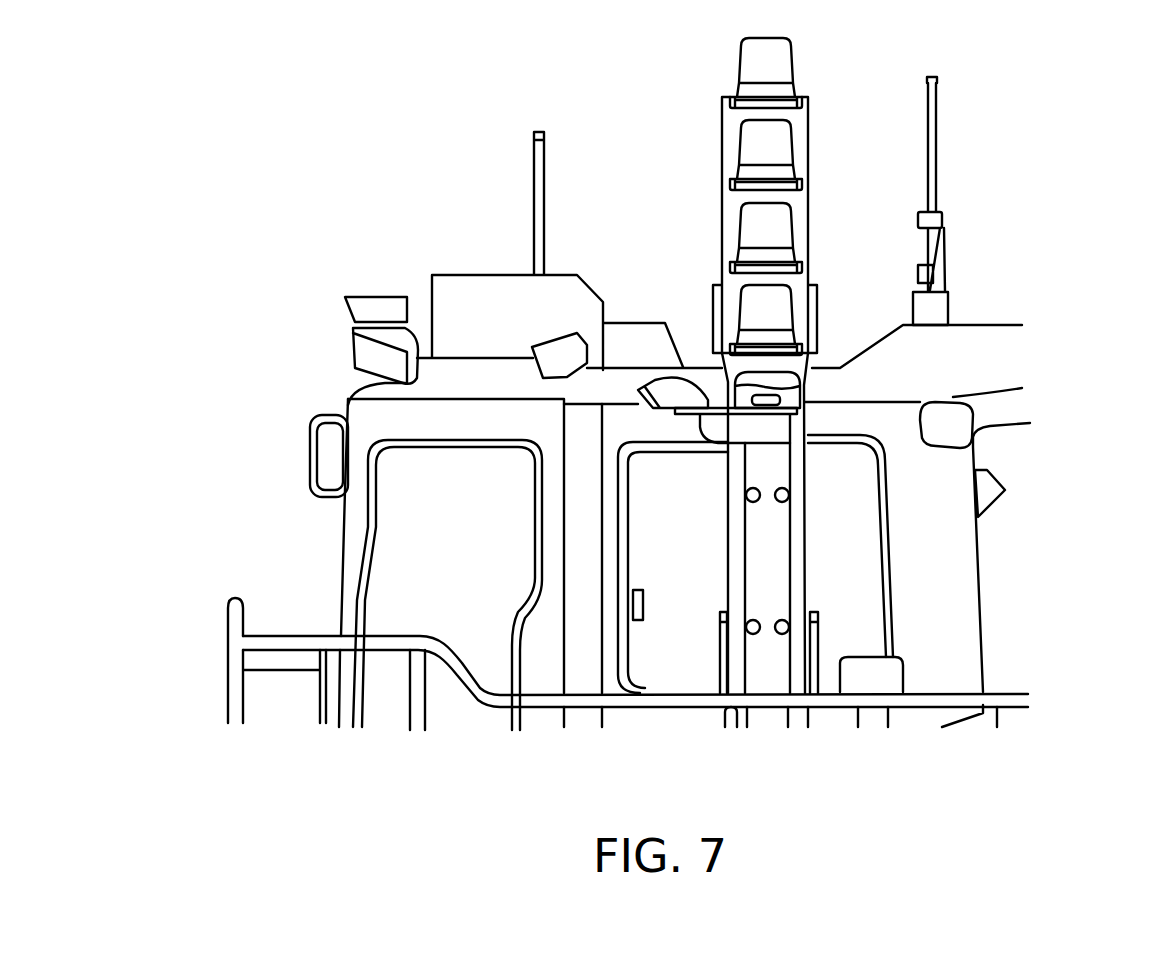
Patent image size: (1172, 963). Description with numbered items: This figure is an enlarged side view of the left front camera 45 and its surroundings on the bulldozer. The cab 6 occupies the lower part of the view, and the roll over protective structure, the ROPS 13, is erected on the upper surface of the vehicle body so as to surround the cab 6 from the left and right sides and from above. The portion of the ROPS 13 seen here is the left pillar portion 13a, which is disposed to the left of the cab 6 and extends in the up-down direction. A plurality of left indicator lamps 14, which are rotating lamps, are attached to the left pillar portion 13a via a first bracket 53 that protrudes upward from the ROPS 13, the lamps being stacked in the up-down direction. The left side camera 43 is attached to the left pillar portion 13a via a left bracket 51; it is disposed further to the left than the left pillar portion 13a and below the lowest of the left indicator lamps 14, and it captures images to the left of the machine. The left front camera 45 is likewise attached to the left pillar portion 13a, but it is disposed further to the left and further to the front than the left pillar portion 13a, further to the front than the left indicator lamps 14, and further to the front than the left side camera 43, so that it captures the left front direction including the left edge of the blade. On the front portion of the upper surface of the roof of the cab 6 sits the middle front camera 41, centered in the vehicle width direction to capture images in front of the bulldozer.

The cab 6 is at (330, 522).
The roll over protective structure (ROPS) 13 is at (826, 543).
The left pillar portion 13a is at (802, 465).
The left indicator lamps 14 is at (750, 223).
The middle front camera 41 is at (380, 303).
The left side camera 43 is at (792, 391).
The left front camera 45 is at (660, 383).
The left bracket 51 is at (812, 418).
The first bracket 53 is at (808, 128).